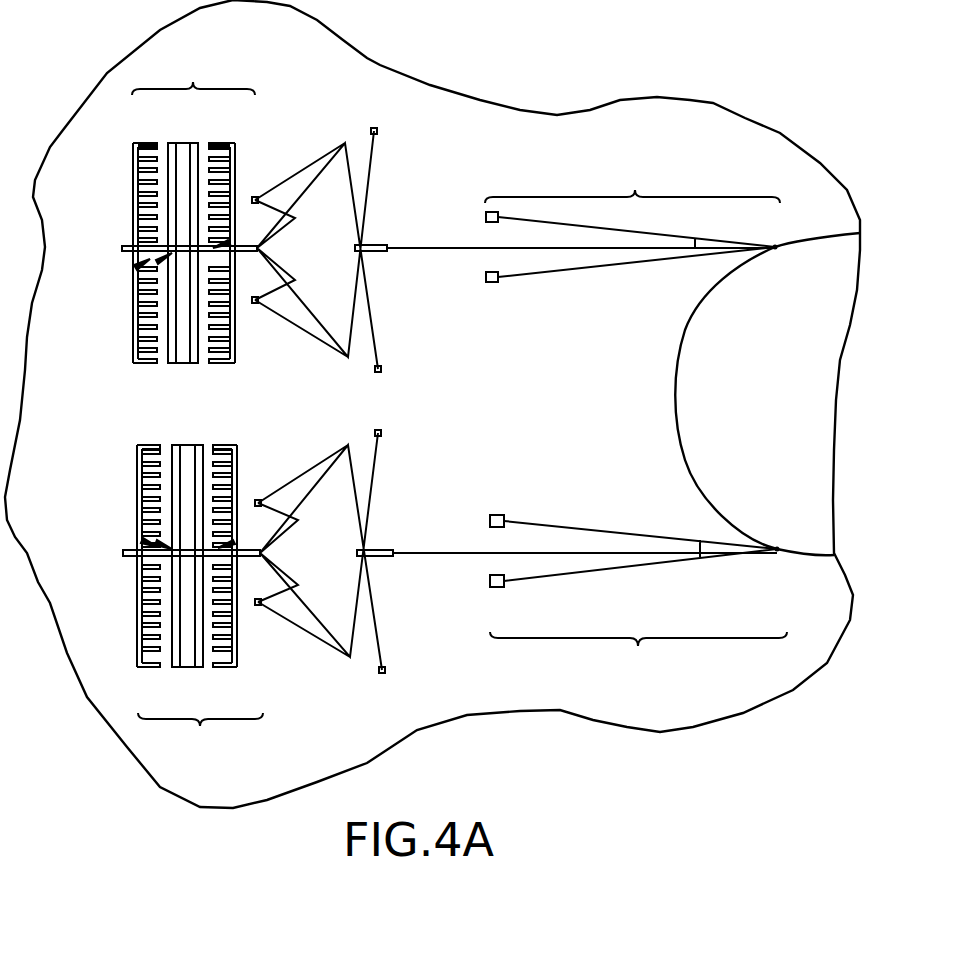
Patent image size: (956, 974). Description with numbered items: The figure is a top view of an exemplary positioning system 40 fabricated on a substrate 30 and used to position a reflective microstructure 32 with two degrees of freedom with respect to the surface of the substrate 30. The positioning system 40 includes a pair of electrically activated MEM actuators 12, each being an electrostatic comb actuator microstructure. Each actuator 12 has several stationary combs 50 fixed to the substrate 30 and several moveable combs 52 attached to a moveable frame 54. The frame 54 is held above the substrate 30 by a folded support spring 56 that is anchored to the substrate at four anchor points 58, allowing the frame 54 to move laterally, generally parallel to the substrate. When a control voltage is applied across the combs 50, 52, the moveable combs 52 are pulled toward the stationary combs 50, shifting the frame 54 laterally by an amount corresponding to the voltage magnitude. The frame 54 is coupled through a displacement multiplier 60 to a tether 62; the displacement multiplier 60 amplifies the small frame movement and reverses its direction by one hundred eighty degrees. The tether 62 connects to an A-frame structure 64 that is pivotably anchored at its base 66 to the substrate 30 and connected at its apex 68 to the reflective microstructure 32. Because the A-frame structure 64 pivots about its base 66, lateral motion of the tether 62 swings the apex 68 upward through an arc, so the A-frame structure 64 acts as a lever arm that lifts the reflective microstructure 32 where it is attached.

The MEM actuator 12 is at (197, 402).
The substrate 30 is at (578, 397).
The reflective microstructure 32 is at (761, 382).
The positioning system 40 is at (483, 132).
The stationary comb 50 is at (157, 141).
The moveable comb 52 is at (209, 141).
The moveable frame 54 is at (122, 248).
The folded support spring 56 is at (182, 142).
The anchor point 58 is at (170, 254).
The displacement multiplier 60 is at (247, 190).
The tether 62 is at (442, 253).
The A-frame structure 64 is at (636, 414).
The base 66 is at (485, 216).
The apex 68 is at (778, 243).